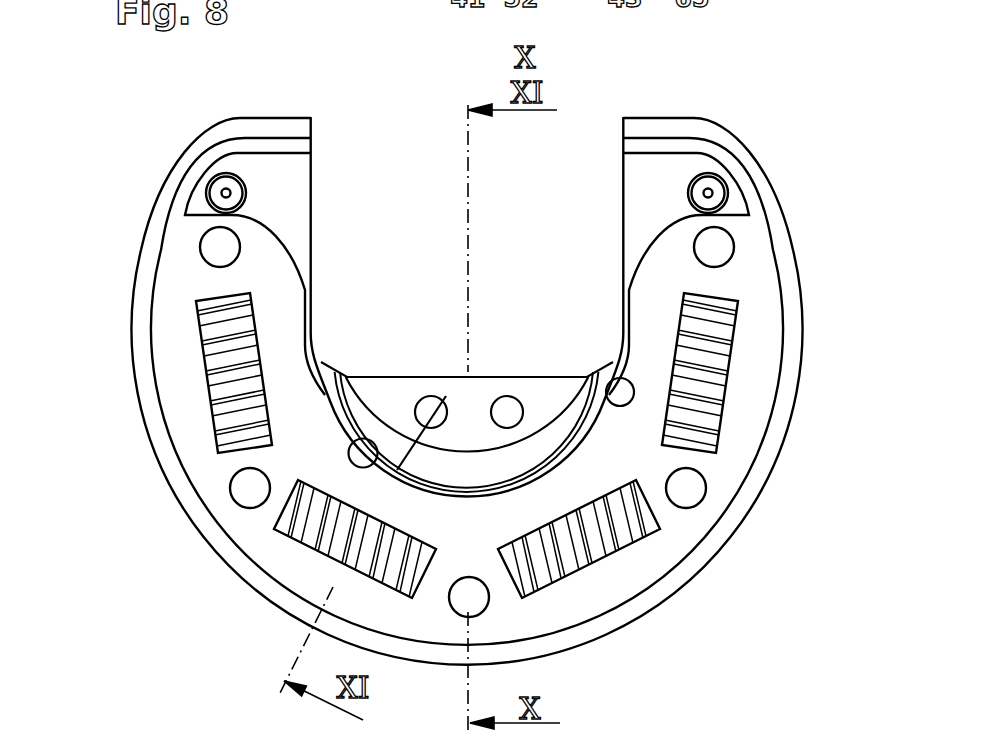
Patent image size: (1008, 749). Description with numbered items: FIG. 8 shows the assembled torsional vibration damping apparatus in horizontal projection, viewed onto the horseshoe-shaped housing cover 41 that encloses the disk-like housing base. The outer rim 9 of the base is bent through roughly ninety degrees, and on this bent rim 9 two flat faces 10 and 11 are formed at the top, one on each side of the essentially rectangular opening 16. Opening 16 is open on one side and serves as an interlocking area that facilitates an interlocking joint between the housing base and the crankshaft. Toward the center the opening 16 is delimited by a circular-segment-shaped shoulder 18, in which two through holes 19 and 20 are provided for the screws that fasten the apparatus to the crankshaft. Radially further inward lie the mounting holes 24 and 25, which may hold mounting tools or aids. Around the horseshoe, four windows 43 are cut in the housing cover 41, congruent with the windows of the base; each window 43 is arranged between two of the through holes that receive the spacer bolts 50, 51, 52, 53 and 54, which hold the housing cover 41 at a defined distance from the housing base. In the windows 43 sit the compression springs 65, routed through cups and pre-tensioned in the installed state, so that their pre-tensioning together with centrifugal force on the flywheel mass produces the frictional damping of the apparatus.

The rim 9 is at (762, 203).
The flat face 10 is at (682, 123).
The flat face 11 is at (253, 127).
The rectangular opening 16 is at (623, 217).
The circular-segment-shaped shoulder 18 is at (465, 398).
The through hole 19 is at (507, 412).
The through hole 20 is at (431, 412).
The mounting hole 24 is at (363, 453).
The mounting hole 25 is at (620, 392).
The housing cover 41 is at (205, 465).
The window 43 is at (207, 372).
The spacer bolt 50 is at (220, 247).
The spacer bolt 51 is at (250, 488).
The spacer bolt 52 is at (469, 597).
The spacer bolt 53 is at (688, 490).
The spacer bolt 54 is at (714, 247).
The compression spring 65 is at (220, 330).